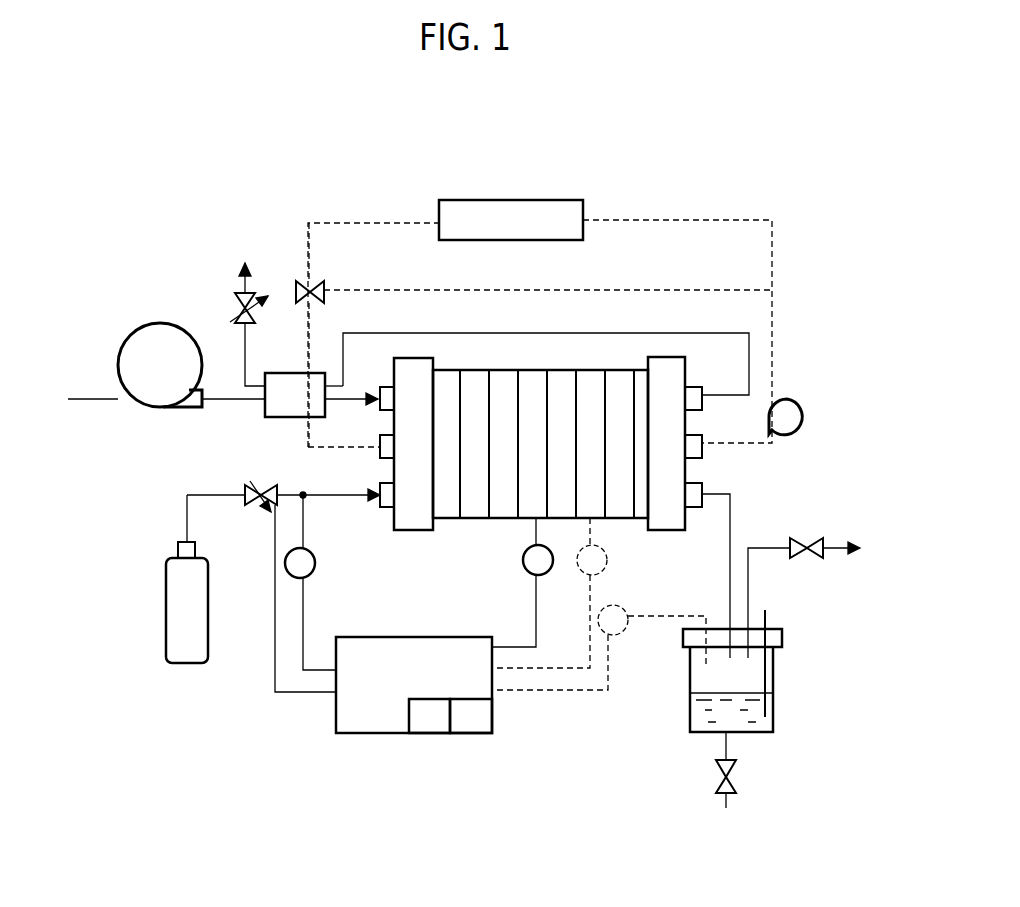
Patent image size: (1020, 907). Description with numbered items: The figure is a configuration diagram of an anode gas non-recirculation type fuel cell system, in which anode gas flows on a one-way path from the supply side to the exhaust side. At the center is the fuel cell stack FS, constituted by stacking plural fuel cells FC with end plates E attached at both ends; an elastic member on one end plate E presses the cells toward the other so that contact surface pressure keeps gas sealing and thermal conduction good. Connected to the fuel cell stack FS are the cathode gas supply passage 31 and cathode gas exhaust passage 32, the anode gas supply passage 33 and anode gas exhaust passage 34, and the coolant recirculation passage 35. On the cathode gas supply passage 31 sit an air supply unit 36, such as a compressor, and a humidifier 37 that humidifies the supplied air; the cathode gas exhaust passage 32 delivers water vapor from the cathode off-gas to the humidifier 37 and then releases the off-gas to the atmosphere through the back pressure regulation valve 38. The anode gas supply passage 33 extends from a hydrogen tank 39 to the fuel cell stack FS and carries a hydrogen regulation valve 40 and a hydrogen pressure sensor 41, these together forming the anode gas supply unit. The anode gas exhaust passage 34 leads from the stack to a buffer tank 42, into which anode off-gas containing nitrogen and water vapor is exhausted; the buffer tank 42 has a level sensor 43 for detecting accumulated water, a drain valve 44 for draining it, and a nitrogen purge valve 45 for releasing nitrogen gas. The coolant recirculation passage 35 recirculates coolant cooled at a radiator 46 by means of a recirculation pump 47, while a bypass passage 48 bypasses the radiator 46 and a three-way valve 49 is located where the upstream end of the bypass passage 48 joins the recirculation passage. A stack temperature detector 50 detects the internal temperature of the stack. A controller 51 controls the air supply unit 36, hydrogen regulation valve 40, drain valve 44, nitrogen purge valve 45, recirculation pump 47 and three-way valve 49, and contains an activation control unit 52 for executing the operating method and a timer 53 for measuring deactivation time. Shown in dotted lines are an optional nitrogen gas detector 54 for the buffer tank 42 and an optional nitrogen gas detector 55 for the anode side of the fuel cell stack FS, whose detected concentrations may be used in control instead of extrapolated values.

The cathode gas supply passage 31 is at (97, 401).
The cathode gas exhaust passage 32 is at (749, 340).
The anode gas supply passage 33 is at (337, 497).
The anode gas exhaust passage 34 is at (730, 552).
The coolant recirculation passage 35 is at (372, 220).
The air supply unit 36 is at (163, 407).
The humidifier 37 is at (265, 405).
The back pressure regulation valve 38 is at (234, 303).
The hydrogen tank 39 is at (166, 636).
The hydrogen regulation valve 40 is at (258, 510).
The hydrogen pressure sensor 41 is at (315, 569).
The buffer tank 42 is at (690, 712).
The level sensor 43 is at (770, 698).
The drain valve 44 is at (716, 781).
The nitrogen purge valve 45 is at (806, 542).
The radiator 46 is at (563, 200).
The recirculation pump 47 is at (805, 417).
The bypass passage 48 is at (655, 289).
The three-way valve 49 is at (322, 286).
The stack temperature detector 50 is at (527, 570).
The controller 51 is at (357, 699).
The activation control unit 52 is at (430, 735).
The timer 53 is at (474, 735).
The nitrogen gas detector 54 is at (620, 635).
The nitrogen gas detector 55 is at (583, 571).
The end plate E is at (414, 365).
The fuel cell FC is at (565, 378).
The fuel cell stack FS is at (458, 520).